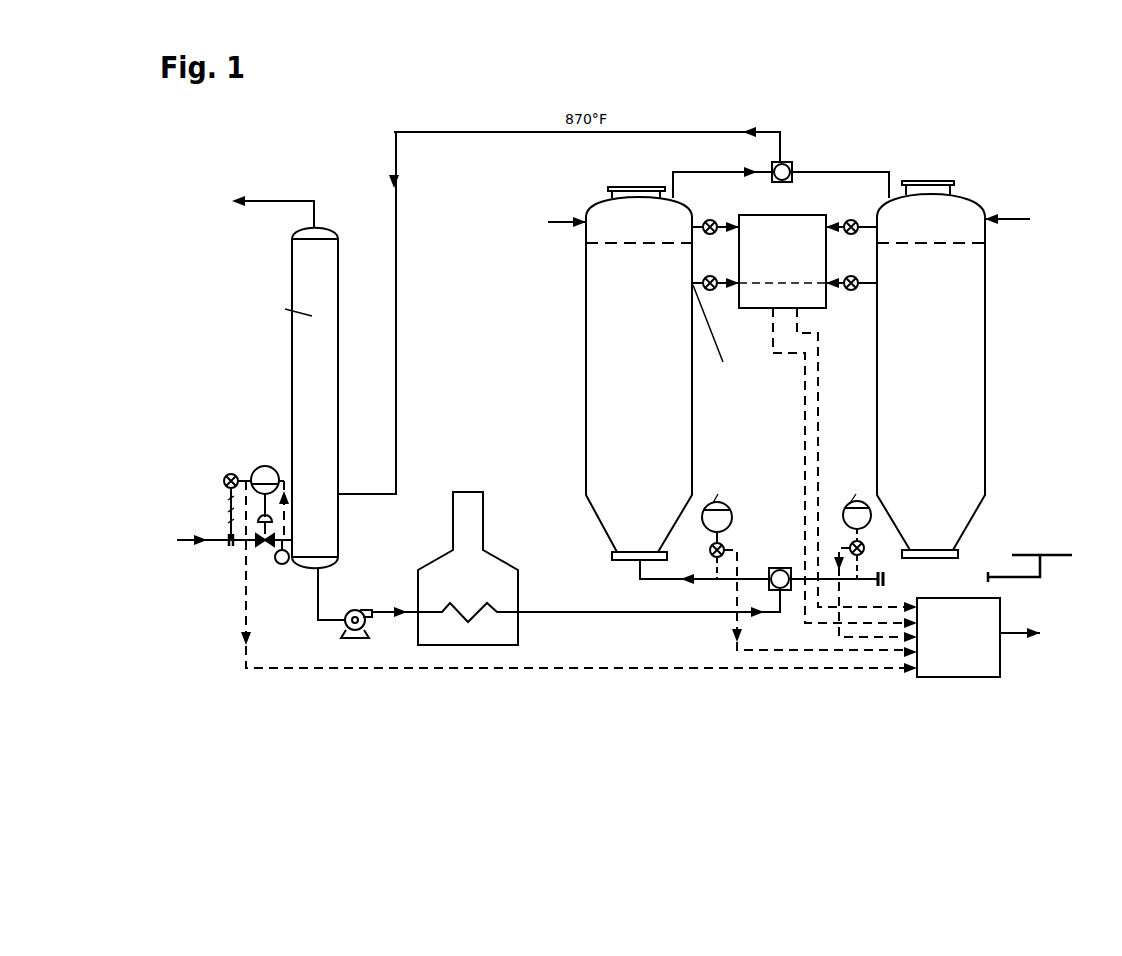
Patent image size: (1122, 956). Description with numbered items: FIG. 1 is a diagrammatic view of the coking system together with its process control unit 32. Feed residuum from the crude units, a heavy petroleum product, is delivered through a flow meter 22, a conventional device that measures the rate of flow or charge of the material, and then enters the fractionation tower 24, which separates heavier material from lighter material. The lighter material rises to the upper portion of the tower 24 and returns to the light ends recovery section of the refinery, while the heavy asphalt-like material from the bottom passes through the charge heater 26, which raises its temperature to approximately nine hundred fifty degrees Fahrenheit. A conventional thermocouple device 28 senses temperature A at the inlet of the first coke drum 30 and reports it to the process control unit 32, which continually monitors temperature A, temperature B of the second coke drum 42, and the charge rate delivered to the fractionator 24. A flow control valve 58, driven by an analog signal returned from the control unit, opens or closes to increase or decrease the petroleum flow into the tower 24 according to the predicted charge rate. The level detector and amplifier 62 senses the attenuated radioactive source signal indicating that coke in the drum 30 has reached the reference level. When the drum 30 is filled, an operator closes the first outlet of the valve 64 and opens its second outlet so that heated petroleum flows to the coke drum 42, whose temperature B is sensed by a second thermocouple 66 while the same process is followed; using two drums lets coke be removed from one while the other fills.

The flow meter 22 is at (230, 547).
The fractionation tower 24 is at (292, 383).
The charge heater 26 is at (483, 512).
The thermocouple device 28 is at (732, 517).
The first coke drum 30 is at (586, 355).
The process control unit 32 is at (970, 675).
The second coke drum 42 is at (985, 400).
The flow control valve 58 is at (262, 474).
The level detector and amplifier 62 is at (787, 215).
The valve 64 is at (781, 568).
The temperature sensor for coke drum B 66 is at (871, 518).